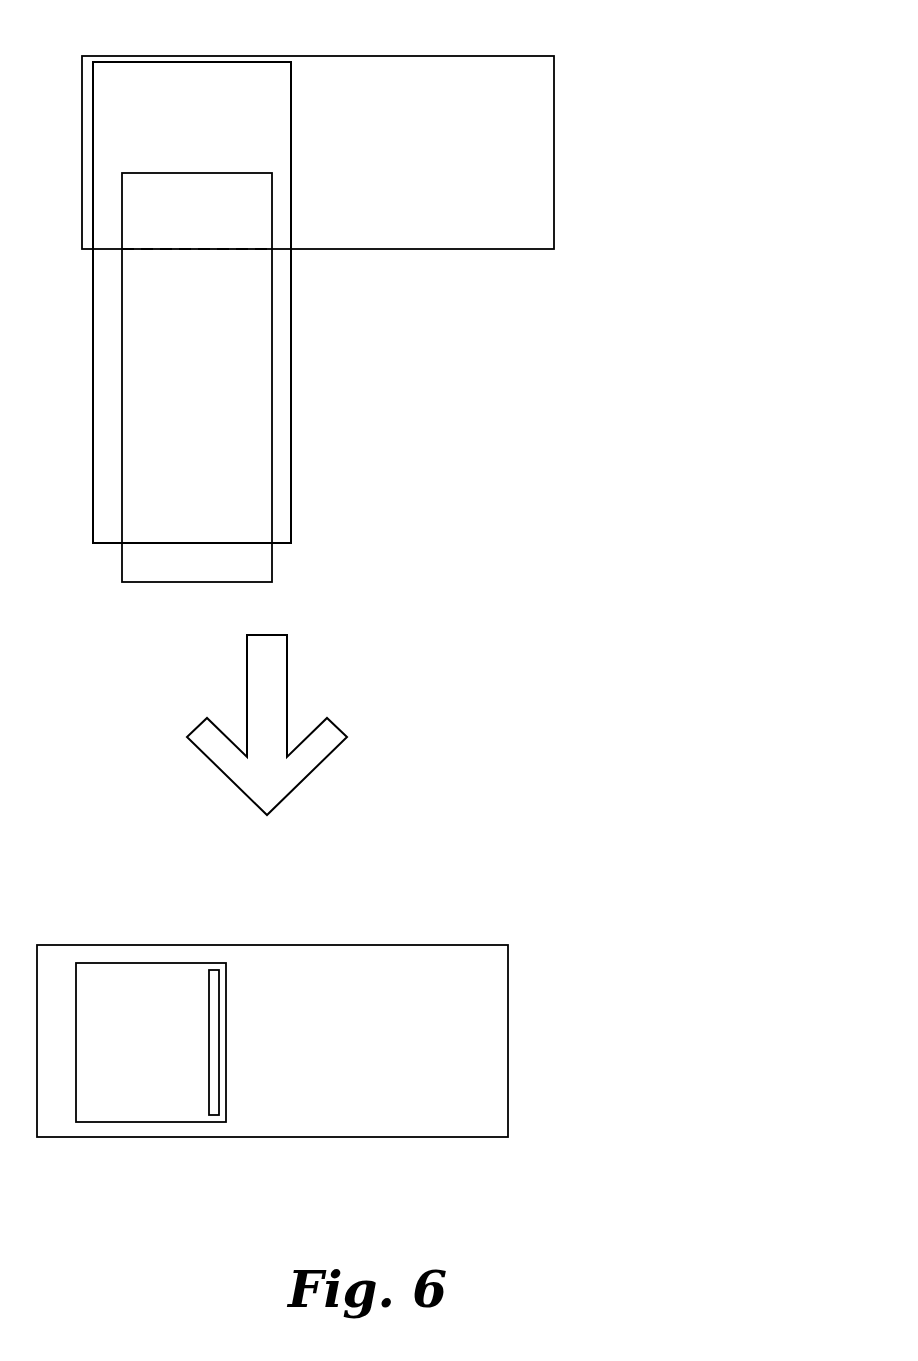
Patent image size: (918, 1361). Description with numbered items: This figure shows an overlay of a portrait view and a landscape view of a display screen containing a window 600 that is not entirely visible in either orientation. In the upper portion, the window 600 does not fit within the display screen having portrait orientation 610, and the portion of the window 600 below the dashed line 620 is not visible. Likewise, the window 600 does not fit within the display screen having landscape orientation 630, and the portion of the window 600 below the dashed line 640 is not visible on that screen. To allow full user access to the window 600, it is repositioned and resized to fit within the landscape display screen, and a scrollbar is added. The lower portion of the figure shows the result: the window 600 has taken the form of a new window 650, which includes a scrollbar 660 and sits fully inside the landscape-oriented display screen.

The window 600 is at (185, 173).
The display screen having portrait orientation 610 is at (291, 390).
The dashed line 620 is at (170, 543).
The display screen having landscape orientation 630 is at (481, 56).
The dashed line 640 is at (170, 249).
The new window 650 is at (151, 963).
The scrollbar 660 is at (218, 1007).